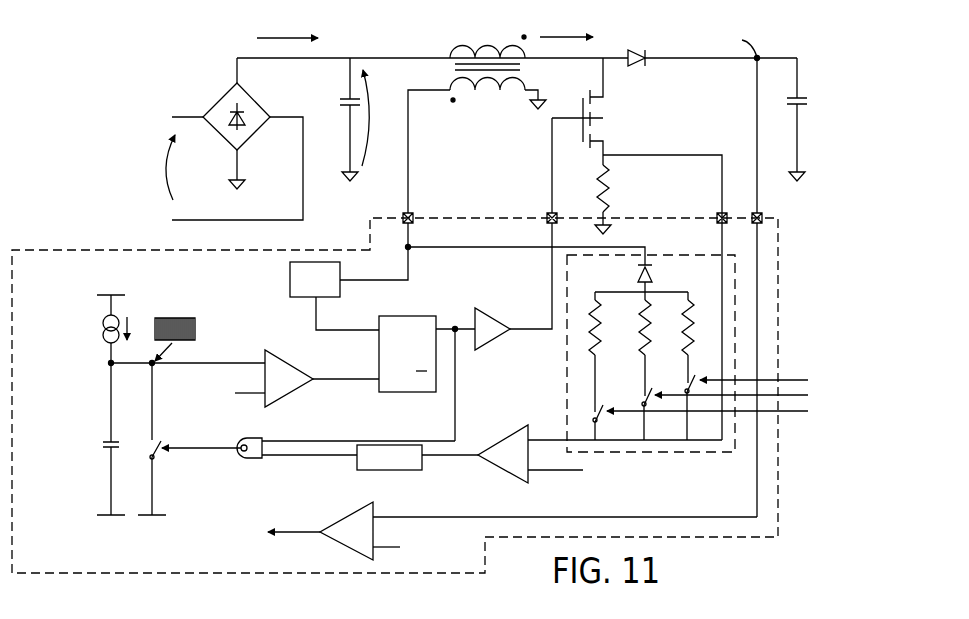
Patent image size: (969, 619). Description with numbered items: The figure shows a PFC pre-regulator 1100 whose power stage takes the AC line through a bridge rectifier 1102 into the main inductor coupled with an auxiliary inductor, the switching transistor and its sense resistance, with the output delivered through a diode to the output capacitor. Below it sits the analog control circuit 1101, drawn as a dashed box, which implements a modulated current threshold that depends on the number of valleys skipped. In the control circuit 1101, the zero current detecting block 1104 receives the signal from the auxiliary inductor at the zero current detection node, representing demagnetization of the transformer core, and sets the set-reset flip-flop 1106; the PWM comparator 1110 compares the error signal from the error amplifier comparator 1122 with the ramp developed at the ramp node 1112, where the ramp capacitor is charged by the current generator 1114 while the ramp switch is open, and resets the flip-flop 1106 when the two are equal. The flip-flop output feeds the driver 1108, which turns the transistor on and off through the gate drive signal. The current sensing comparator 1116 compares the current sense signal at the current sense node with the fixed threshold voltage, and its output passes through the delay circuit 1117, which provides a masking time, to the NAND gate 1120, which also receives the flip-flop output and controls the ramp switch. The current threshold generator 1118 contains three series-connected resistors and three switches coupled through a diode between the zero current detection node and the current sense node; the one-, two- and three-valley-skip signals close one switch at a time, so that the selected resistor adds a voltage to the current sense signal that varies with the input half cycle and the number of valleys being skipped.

The PFC pre-regulator 1100 is at (175, 50).
The analog control circuit 1101 is at (107, 242).
The bridge rectifier 1102 is at (215, 110).
The zero current detecting block 1104 is at (290, 283).
The set-reset flip-flop 1106 is at (410, 392).
The driver 1108 is at (490, 345).
The PWM comparator 1110 is at (285, 360).
The ramp node 1112 is at (100, 373).
The current generator 1114 is at (103, 316).
The current sensing comparator 1116 is at (503, 470).
The delay circuit 1117 is at (385, 472).
The current threshold generator 1118 is at (672, 455).
The NAND gate 1120 is at (248, 462).
The error amplifier comparator 1122 is at (352, 515).